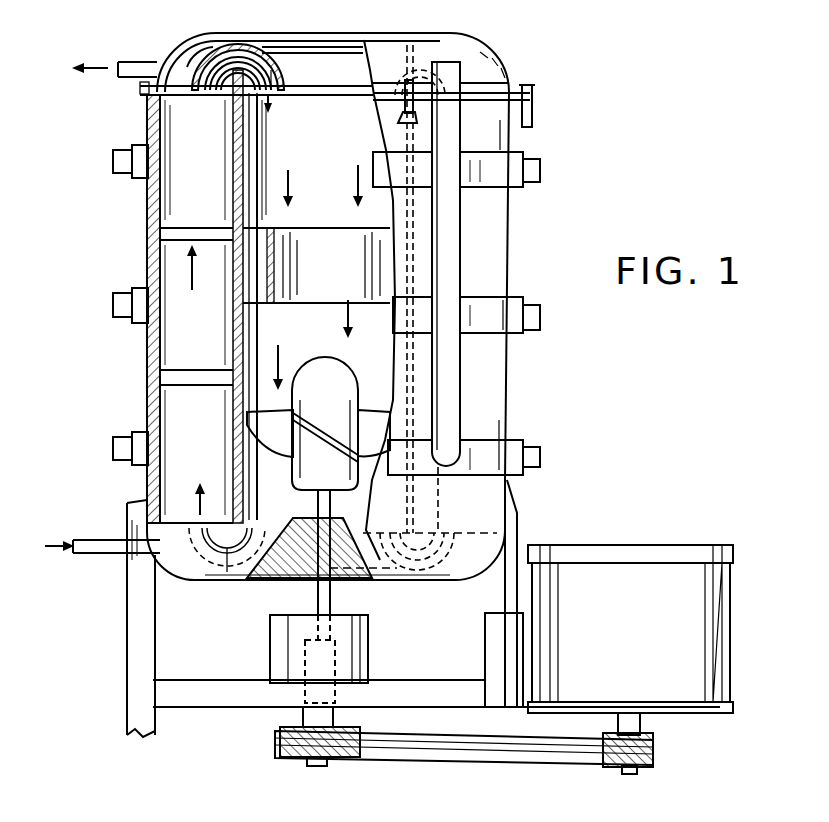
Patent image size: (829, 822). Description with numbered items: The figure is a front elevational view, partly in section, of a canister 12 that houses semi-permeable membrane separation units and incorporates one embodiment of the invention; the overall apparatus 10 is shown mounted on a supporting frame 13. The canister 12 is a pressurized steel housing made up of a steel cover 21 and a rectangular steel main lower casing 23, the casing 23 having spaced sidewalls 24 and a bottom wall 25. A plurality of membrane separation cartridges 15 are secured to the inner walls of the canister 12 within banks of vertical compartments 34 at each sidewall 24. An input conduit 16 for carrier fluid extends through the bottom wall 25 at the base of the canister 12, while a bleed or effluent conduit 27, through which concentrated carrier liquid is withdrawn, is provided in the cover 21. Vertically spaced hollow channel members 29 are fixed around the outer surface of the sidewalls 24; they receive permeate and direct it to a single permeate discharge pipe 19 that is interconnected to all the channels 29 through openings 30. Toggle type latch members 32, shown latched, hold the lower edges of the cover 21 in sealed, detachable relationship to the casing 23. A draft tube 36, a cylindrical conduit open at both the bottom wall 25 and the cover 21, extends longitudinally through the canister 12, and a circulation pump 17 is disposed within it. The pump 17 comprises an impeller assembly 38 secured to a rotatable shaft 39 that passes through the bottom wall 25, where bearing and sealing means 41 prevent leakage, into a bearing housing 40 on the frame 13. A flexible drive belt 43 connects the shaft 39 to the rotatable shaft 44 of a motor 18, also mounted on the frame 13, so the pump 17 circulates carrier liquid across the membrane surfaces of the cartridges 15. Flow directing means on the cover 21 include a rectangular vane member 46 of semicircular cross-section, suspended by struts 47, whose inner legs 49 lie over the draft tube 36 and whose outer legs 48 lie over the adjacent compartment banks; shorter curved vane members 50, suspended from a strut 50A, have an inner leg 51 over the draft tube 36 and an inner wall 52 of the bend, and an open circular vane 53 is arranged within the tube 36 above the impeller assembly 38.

The apparatus 10 is at (522, 243).
The canister 12 is at (156, 235).
The supporting frame 13 is at (130, 703).
The membrane separation cartridges 15 is at (207, 180).
The input conduit 16 is at (127, 552).
The circulation pump 17 is at (333, 383).
The motor 18 is at (710, 612).
The permeate discharge pipe 19 is at (447, 280).
The cover 21 is at (520, 66).
The main lower casing 23 is at (484, 487).
The sidewalls 24 is at (493, 408).
The bottom wall 25 is at (395, 592).
The effluent conduit 27 is at (133, 67).
The hollow channel members 29 is at (137, 463).
The openings 30 is at (436, 160).
The toggle type latch members 32 is at (393, 113).
The vertical compartments 34 is at (180, 383).
The draft tube 36 is at (326, 163).
The impeller assembly 38 is at (283, 447).
The rotatable shaft 39 is at (322, 600).
The bearing housing 40 is at (347, 657).
The bearing and sealing means 41 is at (300, 533).
The flexible drive belt 43 is at (493, 753).
The rotatable shaft 44 is at (643, 727).
The vane member 46 is at (284, 56).
The struts 47 is at (228, 43).
The outer legs 48 is at (208, 78).
The inner legs 49 is at (265, 92).
The curved vane members 50 is at (257, 57).
The strut 50A is at (227, 58).
The inner leg 51 is at (258, 95).
The inner wall 52 is at (230, 82).
The open circular vane 53 is at (285, 297).